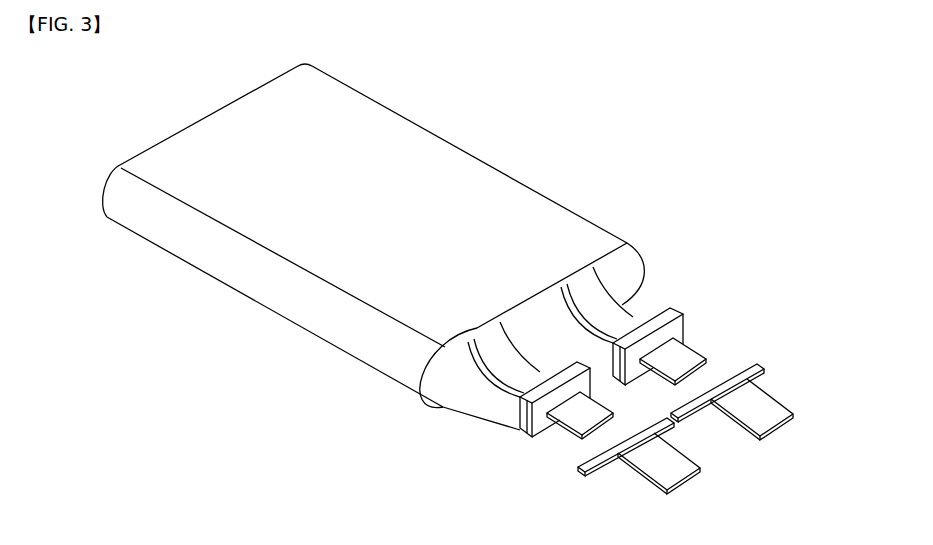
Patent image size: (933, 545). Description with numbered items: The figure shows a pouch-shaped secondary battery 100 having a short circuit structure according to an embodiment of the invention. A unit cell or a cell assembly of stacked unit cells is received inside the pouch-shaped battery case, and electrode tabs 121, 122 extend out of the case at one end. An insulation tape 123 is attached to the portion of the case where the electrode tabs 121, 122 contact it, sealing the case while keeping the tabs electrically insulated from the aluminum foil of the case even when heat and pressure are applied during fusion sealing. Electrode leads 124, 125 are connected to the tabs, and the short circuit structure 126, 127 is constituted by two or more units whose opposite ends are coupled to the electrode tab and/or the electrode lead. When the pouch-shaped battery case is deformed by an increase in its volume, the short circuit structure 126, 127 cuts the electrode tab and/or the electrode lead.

The pouch-shaped secondary battery 100 is at (552, 182).
The electrode tab 121 is at (623, 313).
The electrode tab 122 is at (513, 380).
The insulation tape 123 is at (540, 405).
The electrode lead 124 is at (760, 397).
The electrode lead 125 is at (600, 436).
The short circuit structure 126 is at (685, 326).
The short circuit structure 127 is at (599, 458).